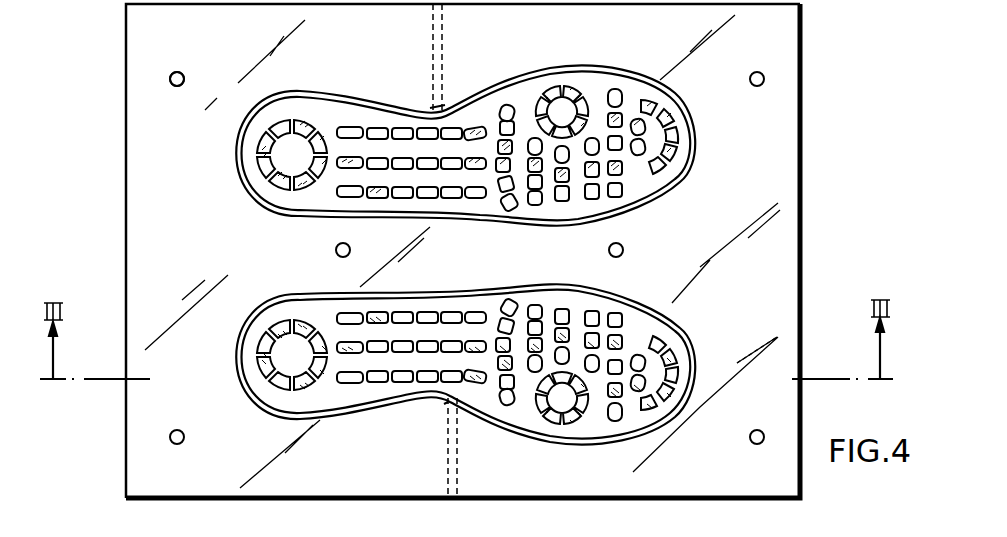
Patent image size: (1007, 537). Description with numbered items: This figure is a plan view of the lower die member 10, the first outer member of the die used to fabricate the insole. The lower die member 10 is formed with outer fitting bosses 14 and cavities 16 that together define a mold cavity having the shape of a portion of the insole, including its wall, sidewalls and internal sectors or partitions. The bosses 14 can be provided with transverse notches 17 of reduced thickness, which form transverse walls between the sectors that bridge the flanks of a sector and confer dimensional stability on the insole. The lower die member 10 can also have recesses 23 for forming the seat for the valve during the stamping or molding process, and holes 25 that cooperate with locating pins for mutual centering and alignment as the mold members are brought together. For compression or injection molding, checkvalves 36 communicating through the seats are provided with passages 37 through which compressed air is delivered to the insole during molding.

The lower die member 10 is at (782, 52).
The bosses 14 is at (570, 88).
The cavities 16 is at (287, 187).
The transverse notches 17 is at (462, 127).
The recesses 23 is at (624, 250).
The holes 25 is at (170, 80).
The checkvalves 36 is at (432, 109).
The passages 37 is at (446, 23).